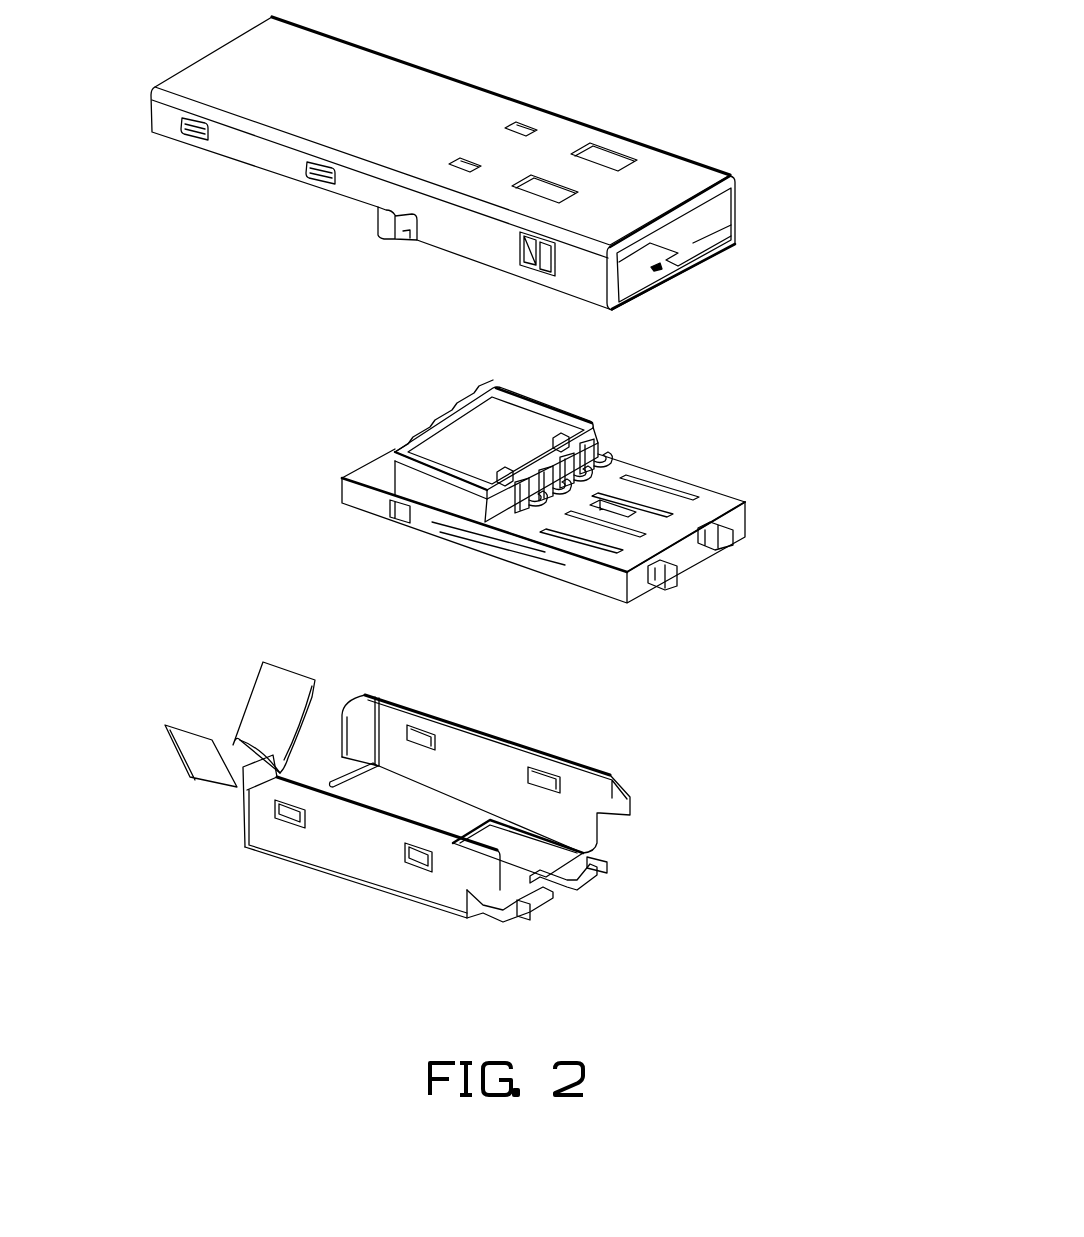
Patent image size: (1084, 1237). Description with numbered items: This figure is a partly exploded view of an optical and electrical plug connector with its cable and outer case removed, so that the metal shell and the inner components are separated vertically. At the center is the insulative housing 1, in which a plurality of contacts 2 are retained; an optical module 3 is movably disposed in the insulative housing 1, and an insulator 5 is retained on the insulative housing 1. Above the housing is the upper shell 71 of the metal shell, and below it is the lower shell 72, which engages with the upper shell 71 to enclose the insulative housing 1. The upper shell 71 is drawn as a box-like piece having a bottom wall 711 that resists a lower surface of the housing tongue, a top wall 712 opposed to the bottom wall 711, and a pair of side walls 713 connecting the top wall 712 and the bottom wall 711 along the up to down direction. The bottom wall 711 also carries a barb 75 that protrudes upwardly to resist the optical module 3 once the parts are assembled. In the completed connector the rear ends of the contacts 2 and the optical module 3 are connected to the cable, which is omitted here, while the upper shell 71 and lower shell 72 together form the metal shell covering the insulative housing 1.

The upper shell 71 is at (500, 70).
The top wall 712 is at (665, 165).
The side walls 713 is at (717, 205).
The bottom wall 711 is at (693, 243).
The barb 75 is at (663, 270).
The insulative housing 1 is at (627, 468).
The insulator 5 is at (487, 433).
The contacts 2 is at (572, 537).
The optical module 3 is at (702, 548).
The lower shell 72 is at (477, 708).